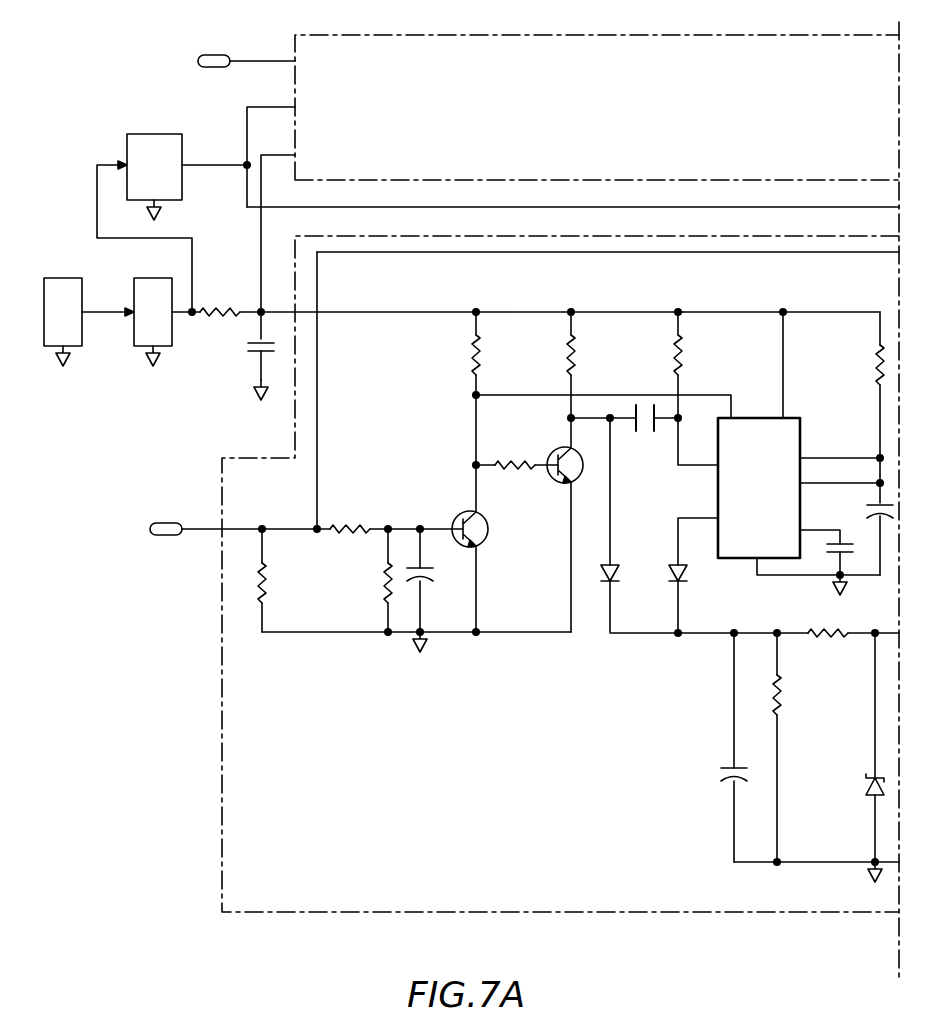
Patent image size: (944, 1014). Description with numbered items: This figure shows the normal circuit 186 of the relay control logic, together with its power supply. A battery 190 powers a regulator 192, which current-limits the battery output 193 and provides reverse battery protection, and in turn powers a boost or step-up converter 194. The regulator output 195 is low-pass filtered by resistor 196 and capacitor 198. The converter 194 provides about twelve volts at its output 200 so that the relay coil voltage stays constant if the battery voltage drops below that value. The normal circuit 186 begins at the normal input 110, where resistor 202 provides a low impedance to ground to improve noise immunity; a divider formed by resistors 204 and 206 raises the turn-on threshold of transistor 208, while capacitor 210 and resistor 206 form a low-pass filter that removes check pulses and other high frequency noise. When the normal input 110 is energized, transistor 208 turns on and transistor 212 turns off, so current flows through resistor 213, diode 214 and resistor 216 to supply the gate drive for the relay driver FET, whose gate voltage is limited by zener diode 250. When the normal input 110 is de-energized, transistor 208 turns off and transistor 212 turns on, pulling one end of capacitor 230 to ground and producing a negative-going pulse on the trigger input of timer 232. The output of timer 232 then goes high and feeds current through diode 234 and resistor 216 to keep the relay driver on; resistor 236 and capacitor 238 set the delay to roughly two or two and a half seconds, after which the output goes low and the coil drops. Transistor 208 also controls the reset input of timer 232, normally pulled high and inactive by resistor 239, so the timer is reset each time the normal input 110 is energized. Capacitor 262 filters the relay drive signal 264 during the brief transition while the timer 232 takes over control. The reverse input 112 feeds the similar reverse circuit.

The normal input 110 is at (166, 537).
The reverse input 112 is at (198, 62).
The normal circuit 186 is at (218, 767).
The battery 190 is at (71, 277).
The regulator 192 is at (152, 278).
The battery output 193 is at (83, 316).
The boost or step-up converter 194 is at (140, 134).
The regulator output 195 is at (173, 316).
The resistor 196 is at (217, 308).
The capacitor 198 is at (251, 358).
The converter output 200 is at (183, 163).
The resistor 202 is at (268, 565).
The resistor 204 is at (343, 520).
The resistor 206 is at (380, 596).
The transistor 208 is at (489, 529).
The capacitor 210 is at (432, 584).
The transistor 212 is at (560, 450).
The resistor 213 is at (576, 353).
The diode 214 is at (616, 568).
The resistor 216 is at (789, 697).
The capacitor 230 is at (646, 433).
The timer 232 is at (746, 405).
The diode 234 is at (687, 580).
The resistor 236 is at (872, 375).
The capacitor 238 is at (866, 517).
The resistor 239 is at (481, 353).
The zener diode 250 is at (864, 795).
The capacitor 262 is at (723, 784).
The relay drive signal 264 is at (700, 639).